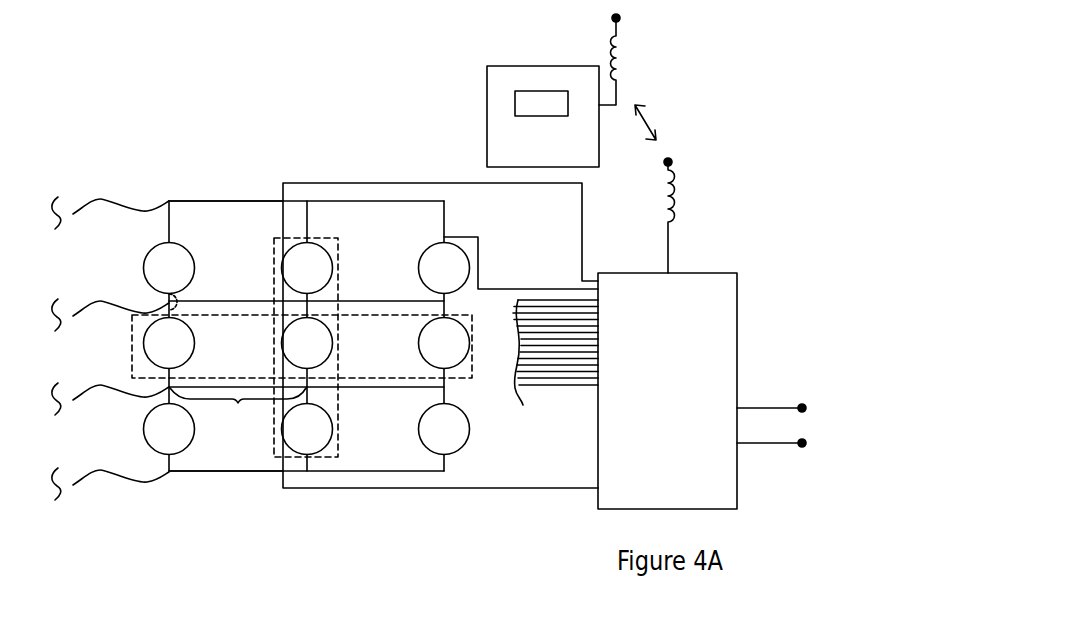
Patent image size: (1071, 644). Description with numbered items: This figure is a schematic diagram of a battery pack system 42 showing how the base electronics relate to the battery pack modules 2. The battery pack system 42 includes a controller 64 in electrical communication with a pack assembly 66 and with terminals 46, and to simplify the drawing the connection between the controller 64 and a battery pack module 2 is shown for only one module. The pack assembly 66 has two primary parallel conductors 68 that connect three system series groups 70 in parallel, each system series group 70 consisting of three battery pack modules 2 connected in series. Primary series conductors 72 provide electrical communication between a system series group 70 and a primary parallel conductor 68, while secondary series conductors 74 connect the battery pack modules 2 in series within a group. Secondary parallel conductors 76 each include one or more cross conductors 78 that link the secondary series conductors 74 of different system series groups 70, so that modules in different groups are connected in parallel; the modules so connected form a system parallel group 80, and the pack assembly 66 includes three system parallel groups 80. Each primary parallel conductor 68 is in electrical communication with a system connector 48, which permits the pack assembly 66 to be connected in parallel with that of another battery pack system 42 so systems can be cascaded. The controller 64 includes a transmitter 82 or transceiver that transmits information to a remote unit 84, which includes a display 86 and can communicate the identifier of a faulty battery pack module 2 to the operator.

The battery pack module 2 is at (188, 250).
The battery pack system 42 is at (458, 538).
The terminals 46 is at (807, 403).
The system connector 48 is at (100, 198).
The controller 64 is at (737, 362).
The pack assembly 66 is at (233, 171).
The primary parallel conductor 68 is at (192, 199).
The system series group 70 is at (329, 237).
The primary series conductor 72 is at (170, 224).
The secondary series conductor 74 is at (186, 307).
The secondary parallel conductor 76 is at (247, 300).
The cross conductor 78 is at (238, 412).
The system parallel group 80 is at (472, 360).
The transmitter 82 is at (672, 172).
The remote unit 84 is at (487, 78).
The display 86 is at (535, 118).